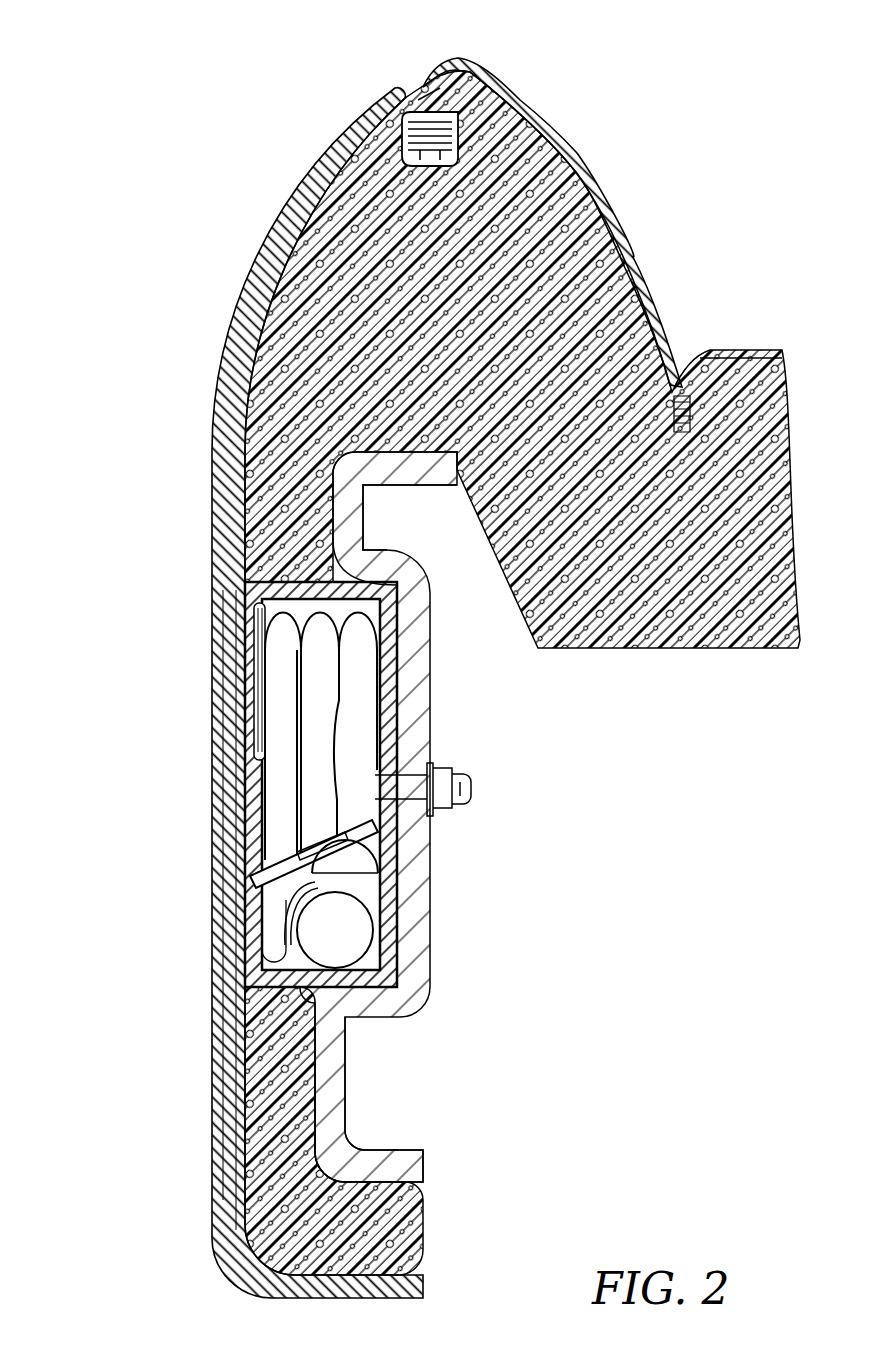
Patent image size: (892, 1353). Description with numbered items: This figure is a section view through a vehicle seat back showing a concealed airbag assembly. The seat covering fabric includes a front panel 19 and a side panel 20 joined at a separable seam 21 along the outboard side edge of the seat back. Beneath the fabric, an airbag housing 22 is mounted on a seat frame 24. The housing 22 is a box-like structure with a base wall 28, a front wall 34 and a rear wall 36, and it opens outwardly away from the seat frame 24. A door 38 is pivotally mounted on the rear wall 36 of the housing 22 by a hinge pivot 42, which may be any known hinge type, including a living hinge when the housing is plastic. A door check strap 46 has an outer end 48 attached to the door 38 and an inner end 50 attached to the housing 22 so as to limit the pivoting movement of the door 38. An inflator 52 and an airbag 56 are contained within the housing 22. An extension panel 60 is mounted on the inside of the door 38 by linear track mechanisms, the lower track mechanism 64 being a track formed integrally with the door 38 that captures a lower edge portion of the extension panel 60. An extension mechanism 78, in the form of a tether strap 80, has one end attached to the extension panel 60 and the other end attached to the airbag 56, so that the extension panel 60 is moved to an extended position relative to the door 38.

The front panel 19 is at (600, 190).
The side panel 20 is at (255, 238).
The separable seam 21 is at (432, 95).
The airbag housing 22 is at (392, 630).
The seat frame 24 is at (413, 720).
The base wall 28 is at (382, 878).
The front wall 34 is at (306, 595).
The rear wall 36 is at (335, 985).
The door 38 is at (237, 813).
The hinge pivot 42 is at (243, 975).
The door check strap 46 is at (352, 833).
The outer end 48 is at (297, 880).
The inner end 50 is at (383, 828).
The inflator 52 is at (350, 943).
The airbag 56 is at (310, 767).
The extension panel 60 is at (252, 735).
The lower track mechanism 64 is at (383, 905).
The extension mechanism 78 is at (260, 667).
The tether strap 80 is at (263, 693).